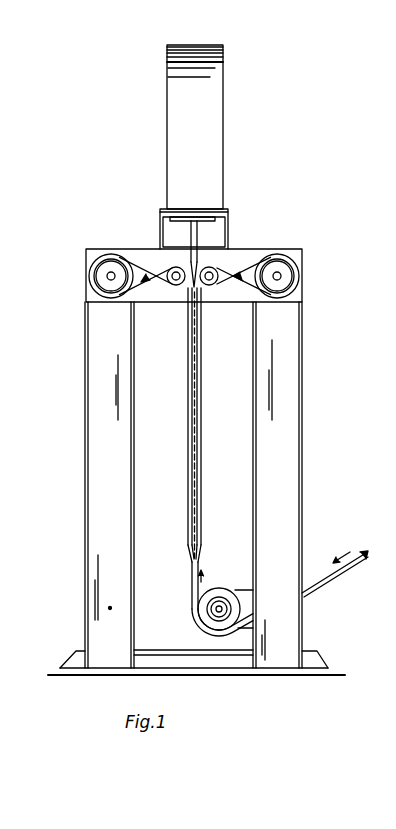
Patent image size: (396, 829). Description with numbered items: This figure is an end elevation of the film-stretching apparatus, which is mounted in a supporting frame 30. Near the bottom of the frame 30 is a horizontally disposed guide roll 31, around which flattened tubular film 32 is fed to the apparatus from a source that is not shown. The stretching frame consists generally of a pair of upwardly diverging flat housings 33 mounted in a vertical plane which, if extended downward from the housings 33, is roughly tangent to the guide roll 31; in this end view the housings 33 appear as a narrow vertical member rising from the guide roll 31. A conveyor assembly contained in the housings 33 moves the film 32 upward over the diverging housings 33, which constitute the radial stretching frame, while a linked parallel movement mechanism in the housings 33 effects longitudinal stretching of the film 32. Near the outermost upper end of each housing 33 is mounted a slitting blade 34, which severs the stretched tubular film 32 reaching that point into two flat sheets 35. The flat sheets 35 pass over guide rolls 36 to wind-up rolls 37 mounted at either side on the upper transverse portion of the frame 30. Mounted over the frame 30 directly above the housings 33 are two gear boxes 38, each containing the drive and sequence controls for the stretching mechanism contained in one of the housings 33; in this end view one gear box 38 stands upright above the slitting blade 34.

The supporting frame 30 is at (302, 508).
The guide roll 31 is at (218, 589).
The flattened tubular film 32 is at (190, 572).
The flat housings 33 is at (191, 353).
The slitting blade 34 is at (197, 283).
The flat sheets 35 is at (139, 257).
The guide rolls 36 is at (177, 286).
The wind-up rolls 37 is at (96, 273).
The gear box 38 is at (167, 121).